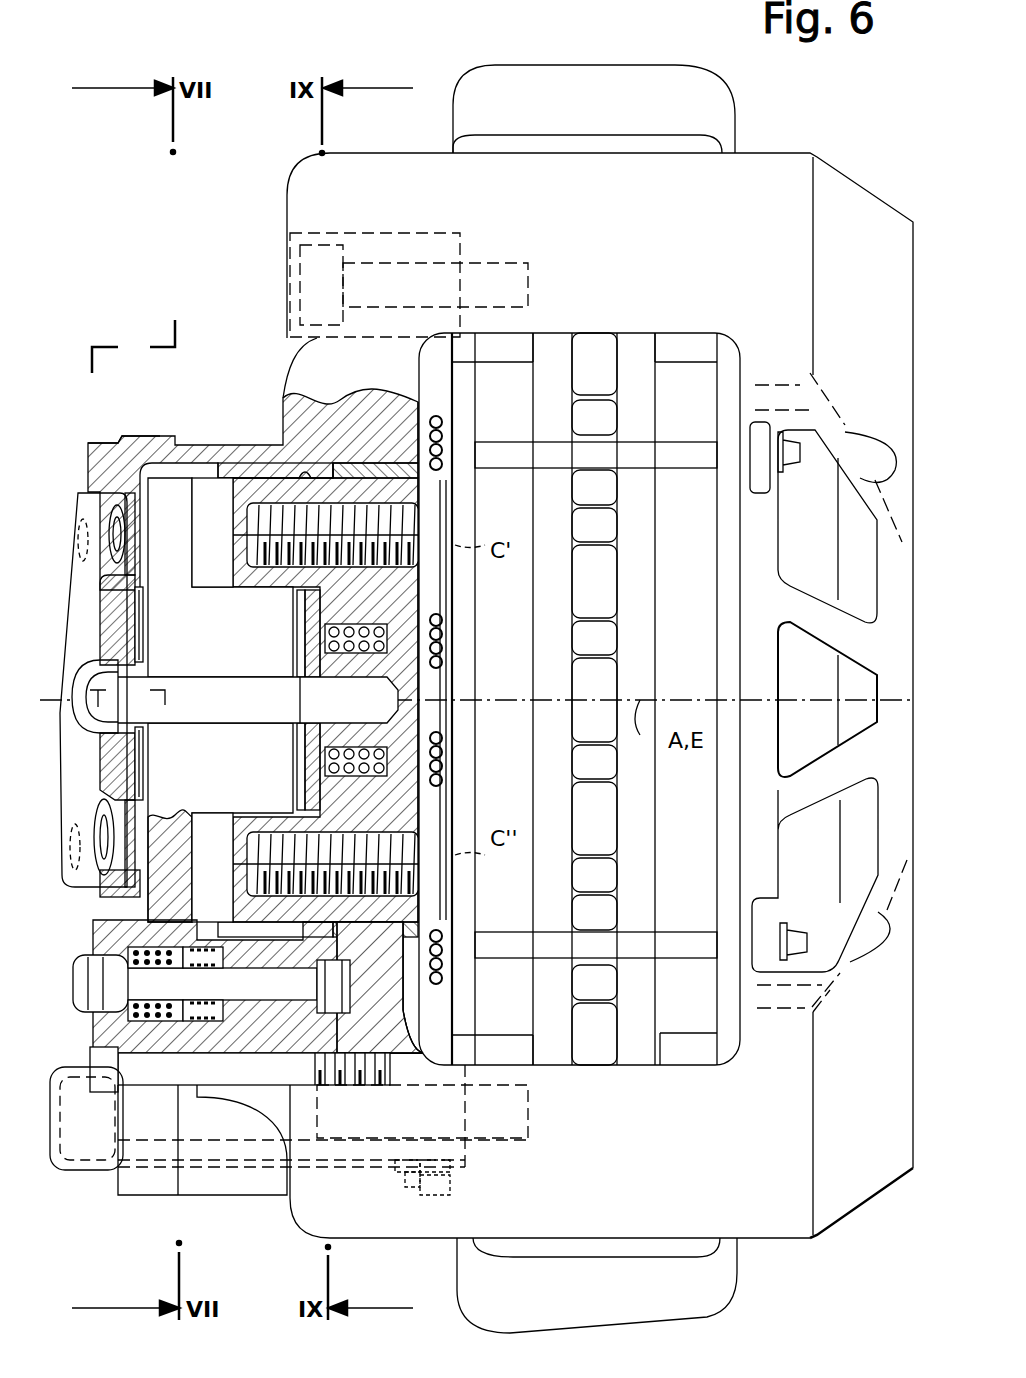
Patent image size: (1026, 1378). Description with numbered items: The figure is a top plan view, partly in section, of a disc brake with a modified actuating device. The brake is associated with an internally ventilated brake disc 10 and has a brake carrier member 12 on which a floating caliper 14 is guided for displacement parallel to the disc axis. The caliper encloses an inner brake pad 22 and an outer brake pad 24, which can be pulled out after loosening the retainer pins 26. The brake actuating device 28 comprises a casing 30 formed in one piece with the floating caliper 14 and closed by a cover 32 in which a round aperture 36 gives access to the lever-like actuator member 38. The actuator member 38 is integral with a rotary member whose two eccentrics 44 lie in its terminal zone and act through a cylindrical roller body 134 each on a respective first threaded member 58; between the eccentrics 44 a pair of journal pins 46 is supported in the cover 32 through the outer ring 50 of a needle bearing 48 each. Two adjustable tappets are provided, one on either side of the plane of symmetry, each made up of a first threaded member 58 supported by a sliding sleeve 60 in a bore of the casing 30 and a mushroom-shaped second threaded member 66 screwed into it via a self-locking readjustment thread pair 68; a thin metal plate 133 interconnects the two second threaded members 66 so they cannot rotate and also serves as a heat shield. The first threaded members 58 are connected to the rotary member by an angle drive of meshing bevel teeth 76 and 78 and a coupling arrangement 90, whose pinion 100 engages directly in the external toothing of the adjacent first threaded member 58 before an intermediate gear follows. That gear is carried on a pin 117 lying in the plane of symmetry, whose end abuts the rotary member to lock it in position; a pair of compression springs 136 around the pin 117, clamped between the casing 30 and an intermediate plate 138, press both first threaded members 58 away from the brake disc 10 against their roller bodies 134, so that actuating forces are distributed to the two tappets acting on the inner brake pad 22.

The brake disc 10 is at (655, 508).
The brake carrier member 12 is at (635, 78).
The floating caliper 14 is at (778, 172).
The inner brake pad 22 is at (502, 345).
The outer brake pad 24 is at (678, 345).
The retainer pins 26 is at (672, 470).
The brake actuating device 28 is at (205, 392).
The casing 30 is at (285, 392).
The cover 32 is at (122, 465).
The aperture 36 is at (95, 660).
The actuator member 38 is at (180, 700).
The eccentric 44 is at (190, 470).
The journal pin 46 is at (220, 700).
The needle bearing 48 is at (108, 540).
The outer ring 50 is at (135, 600).
The first threaded member 58 is at (355, 470).
The sliding sleeve 60 is at (398, 470).
The second threaded member 66 is at (400, 525).
The readjustment thread pair 68 is at (420, 565).
The bevel teeth 76 is at (100, 922).
The bevel teeth 78 is at (160, 1090).
The coupling arrangement 90 is at (103, 1025).
The pinion 100 is at (313, 1053).
The pin 117 is at (400, 705).
The metal plate 133 is at (445, 760).
The roller body 134 is at (232, 478).
The compression springs 136 is at (385, 640).
The intermediate plate 138 is at (320, 755).